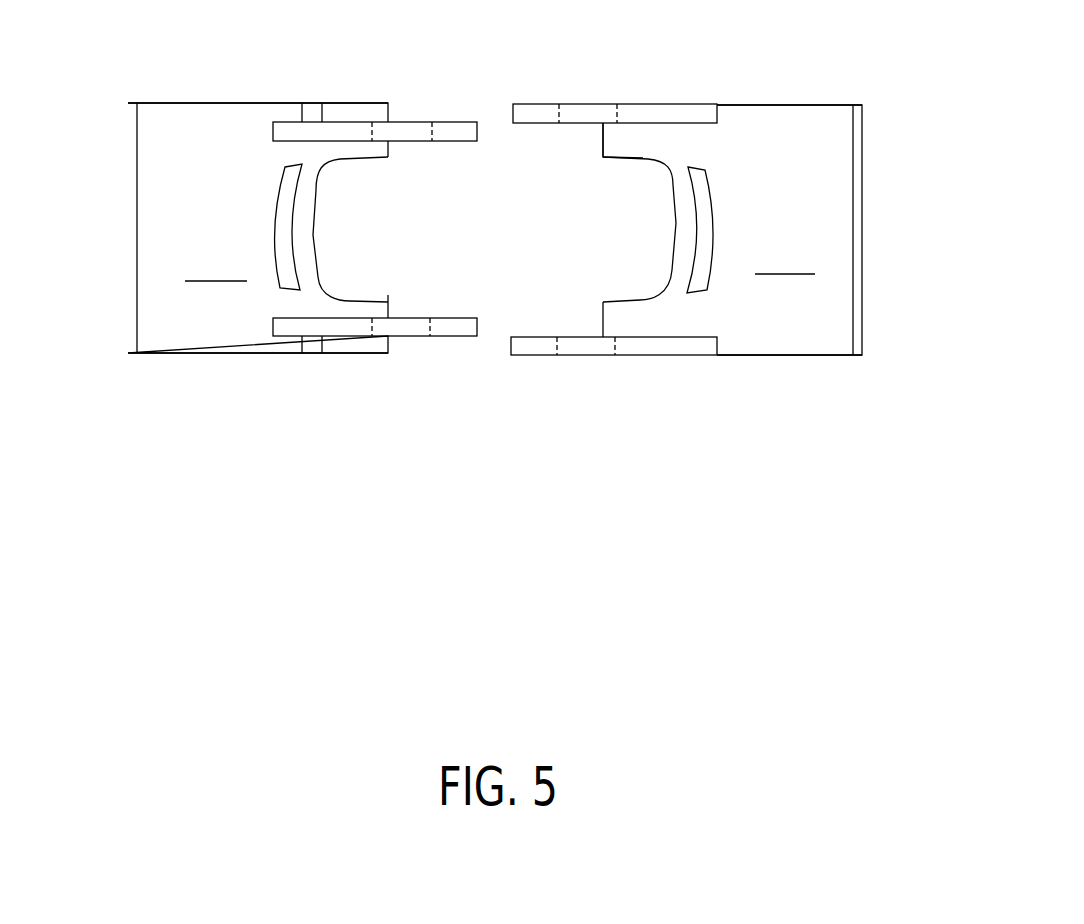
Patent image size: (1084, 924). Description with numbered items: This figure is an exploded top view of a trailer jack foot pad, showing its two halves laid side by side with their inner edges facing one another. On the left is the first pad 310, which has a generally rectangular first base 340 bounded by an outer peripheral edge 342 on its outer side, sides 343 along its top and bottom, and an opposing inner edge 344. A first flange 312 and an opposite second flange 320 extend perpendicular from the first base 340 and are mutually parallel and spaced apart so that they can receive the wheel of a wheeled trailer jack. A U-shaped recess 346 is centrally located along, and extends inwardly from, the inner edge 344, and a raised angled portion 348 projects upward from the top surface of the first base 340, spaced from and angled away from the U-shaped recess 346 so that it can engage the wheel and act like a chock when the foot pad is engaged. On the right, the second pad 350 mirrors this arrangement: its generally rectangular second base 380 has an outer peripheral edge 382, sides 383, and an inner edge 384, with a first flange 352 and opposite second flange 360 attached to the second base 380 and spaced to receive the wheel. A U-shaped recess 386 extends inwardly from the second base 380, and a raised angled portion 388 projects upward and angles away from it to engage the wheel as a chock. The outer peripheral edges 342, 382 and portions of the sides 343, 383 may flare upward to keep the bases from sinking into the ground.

The first pad 310 is at (146, 345).
The first flange 312 is at (452, 327).
The second flange 320 is at (445, 130).
The first base 340 is at (216, 265).
The outer peripheral edge 342 is at (128, 225).
The sides 343 is at (200, 103).
The inner edge 344 is at (387, 306).
The U-shaped recess 346 is at (317, 215).
The raised angled portion 348 is at (283, 215).
The second pad 350 is at (840, 122).
The first flange 352 is at (538, 348).
The second flange 360 is at (538, 112).
The second base 380 is at (785, 256).
The outer peripheral edge 382 is at (858, 310).
The sides 383 is at (760, 105).
The inner edge 384 is at (602, 143).
The U-shaped recess 386 is at (675, 222).
The raised angled portion 388 is at (706, 210).